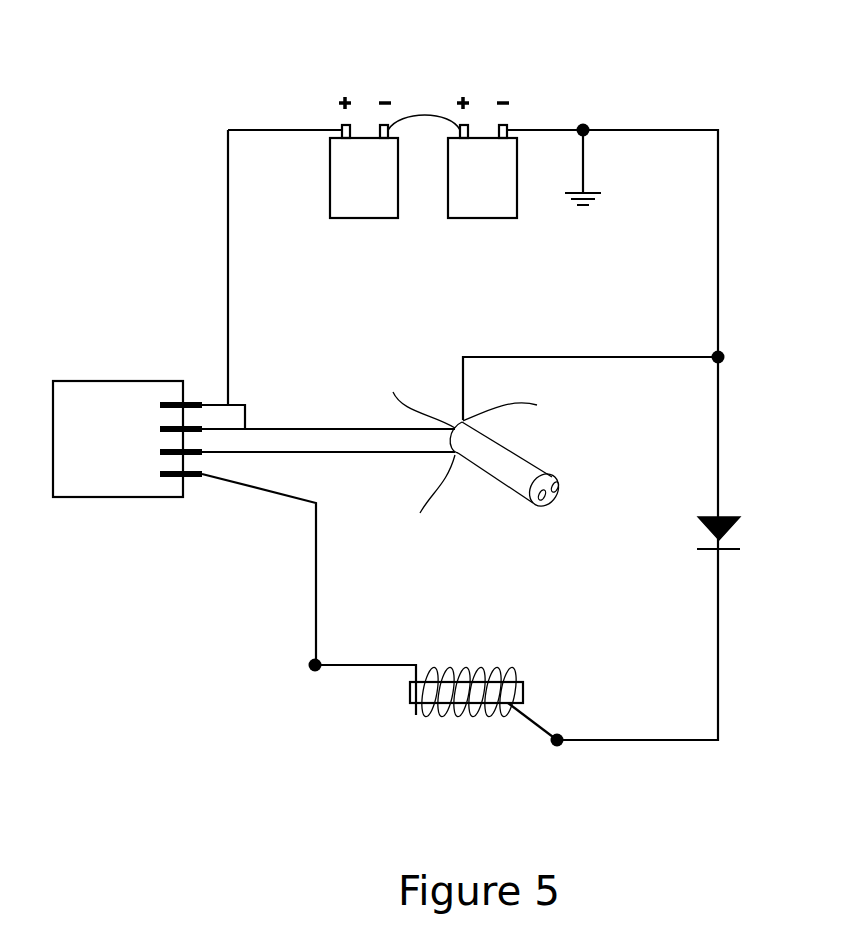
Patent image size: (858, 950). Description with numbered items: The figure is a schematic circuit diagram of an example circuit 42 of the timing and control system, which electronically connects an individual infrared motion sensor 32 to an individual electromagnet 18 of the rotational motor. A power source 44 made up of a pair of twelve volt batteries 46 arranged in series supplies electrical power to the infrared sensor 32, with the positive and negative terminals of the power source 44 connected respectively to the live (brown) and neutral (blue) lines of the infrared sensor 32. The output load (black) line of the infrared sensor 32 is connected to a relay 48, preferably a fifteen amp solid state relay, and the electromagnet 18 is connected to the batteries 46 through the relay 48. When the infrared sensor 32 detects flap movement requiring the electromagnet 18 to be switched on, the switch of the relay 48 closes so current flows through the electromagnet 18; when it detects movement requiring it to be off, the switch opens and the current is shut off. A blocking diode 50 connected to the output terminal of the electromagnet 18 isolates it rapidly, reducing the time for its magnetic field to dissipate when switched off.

The circuit 42 is at (84, 136).
The power source 44 is at (433, 121).
The twelve volt batteries 46 is at (467, 208).
The relay 48 is at (127, 439).
The infrared motion sensor 32 is at (528, 470).
The blocking diode 50 is at (725, 527).
The electromagnet 18 is at (508, 668).